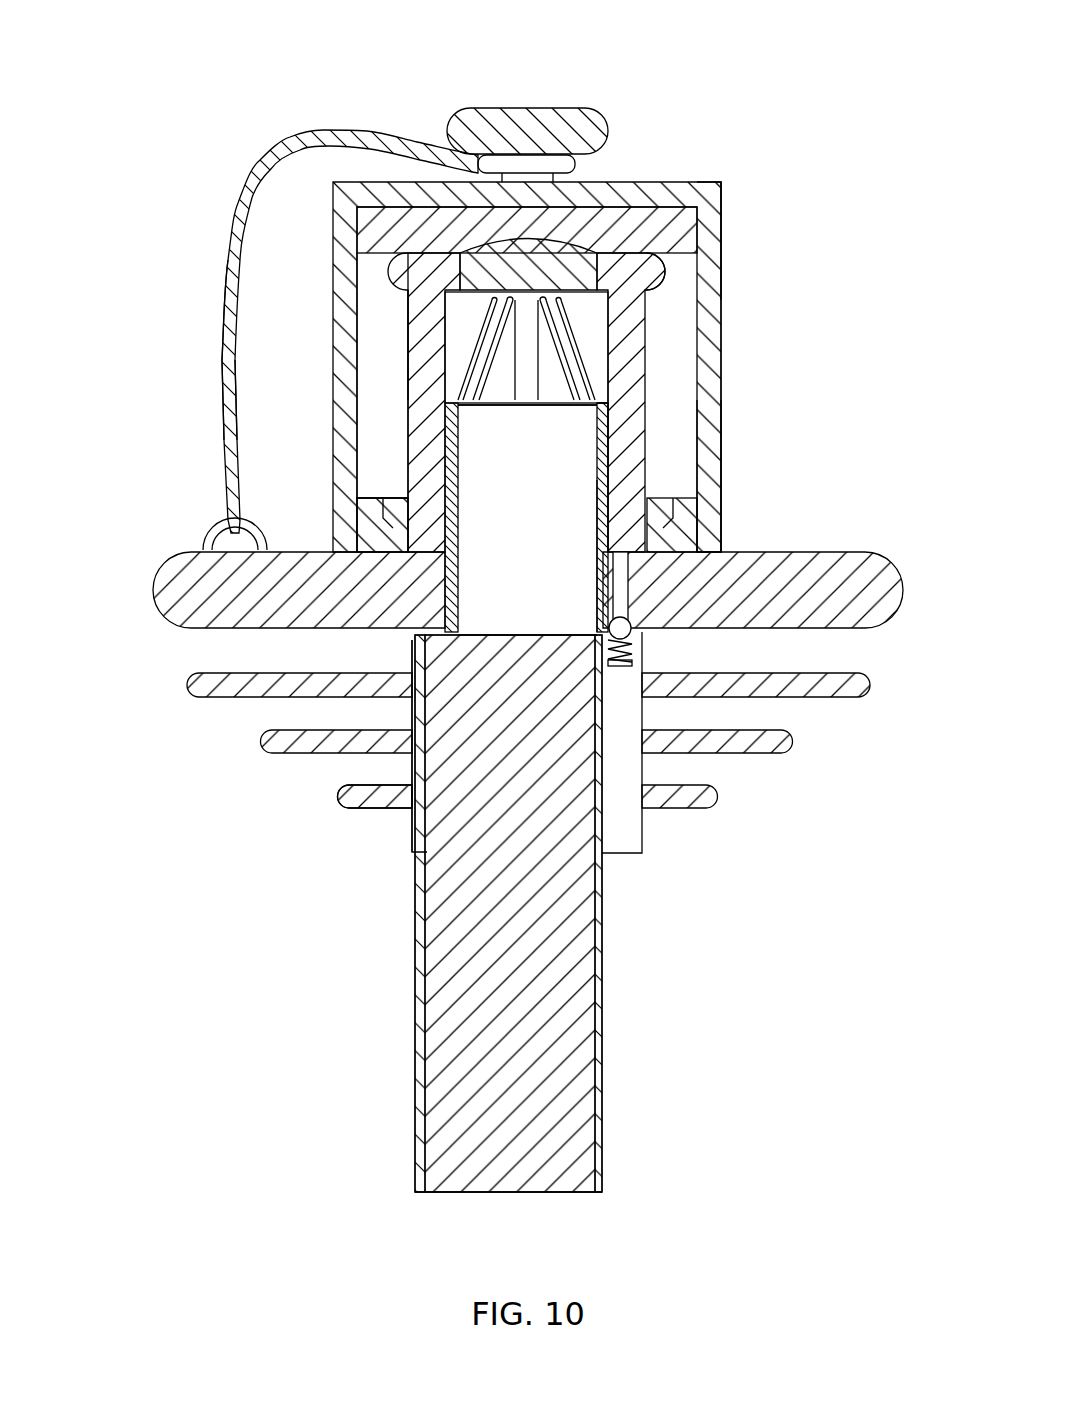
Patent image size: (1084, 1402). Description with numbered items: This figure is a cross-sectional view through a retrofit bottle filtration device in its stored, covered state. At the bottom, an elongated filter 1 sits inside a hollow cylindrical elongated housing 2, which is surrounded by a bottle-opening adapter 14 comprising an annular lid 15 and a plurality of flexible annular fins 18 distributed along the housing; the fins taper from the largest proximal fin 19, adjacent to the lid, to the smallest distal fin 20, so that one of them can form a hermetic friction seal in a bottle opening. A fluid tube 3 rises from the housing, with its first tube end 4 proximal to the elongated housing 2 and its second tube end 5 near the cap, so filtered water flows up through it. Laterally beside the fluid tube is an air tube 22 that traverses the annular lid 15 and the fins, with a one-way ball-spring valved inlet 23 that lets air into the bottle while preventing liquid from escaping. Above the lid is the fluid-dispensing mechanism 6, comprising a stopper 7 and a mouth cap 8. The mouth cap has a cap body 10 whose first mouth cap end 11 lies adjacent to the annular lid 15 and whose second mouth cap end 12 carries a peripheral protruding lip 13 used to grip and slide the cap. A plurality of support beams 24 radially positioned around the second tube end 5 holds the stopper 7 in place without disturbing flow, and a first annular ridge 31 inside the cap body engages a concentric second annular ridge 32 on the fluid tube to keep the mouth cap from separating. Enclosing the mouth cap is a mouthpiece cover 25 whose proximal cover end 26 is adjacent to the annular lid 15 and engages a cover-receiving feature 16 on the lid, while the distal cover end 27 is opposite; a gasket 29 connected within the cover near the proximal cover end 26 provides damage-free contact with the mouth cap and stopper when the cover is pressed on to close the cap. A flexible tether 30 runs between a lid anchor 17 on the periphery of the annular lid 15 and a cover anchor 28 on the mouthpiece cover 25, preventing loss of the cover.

The elongated filter 1 is at (510, 1183).
The elongated housing 2 is at (443, 1028).
The fluid tube 3 is at (556, 534).
The first tube end 4 is at (580, 602).
The second tube end 5 is at (582, 437).
The fluid-dispensing mechanism 6 is at (850, 394).
The stopper 7 is at (572, 250).
The mouth cap 8 is at (341, 104).
The cap body 10 is at (417, 395).
The first mouth cap end 11 is at (391, 461).
The second mouth cap end 12 is at (396, 317).
The protruding lip 13 is at (658, 258).
The bottle-opening adapter 14 is at (153, 421).
The annular lid 15 is at (878, 572).
The cover-receiving feature 16 is at (377, 533).
The lid anchor 17 is at (213, 530).
The plurality of flexible annular fins 18 is at (238, 809).
The proximal fin 19 is at (207, 692).
The distal fin 20 is at (360, 802).
The air tube 22 is at (623, 585).
The valved inlet 23 is at (631, 869).
The plurality of support beams 24 is at (483, 392).
The mouthpiece cover 25 is at (724, 193).
The proximal cover end 26 is at (744, 496).
The distal cover end 27 is at (739, 239).
The cover anchor 28 is at (493, 118).
The gasket 29 is at (688, 217).
The tether 30 is at (227, 262).
The first annular ridge 31 is at (603, 548).
The second annular ridge 32 is at (603, 410).